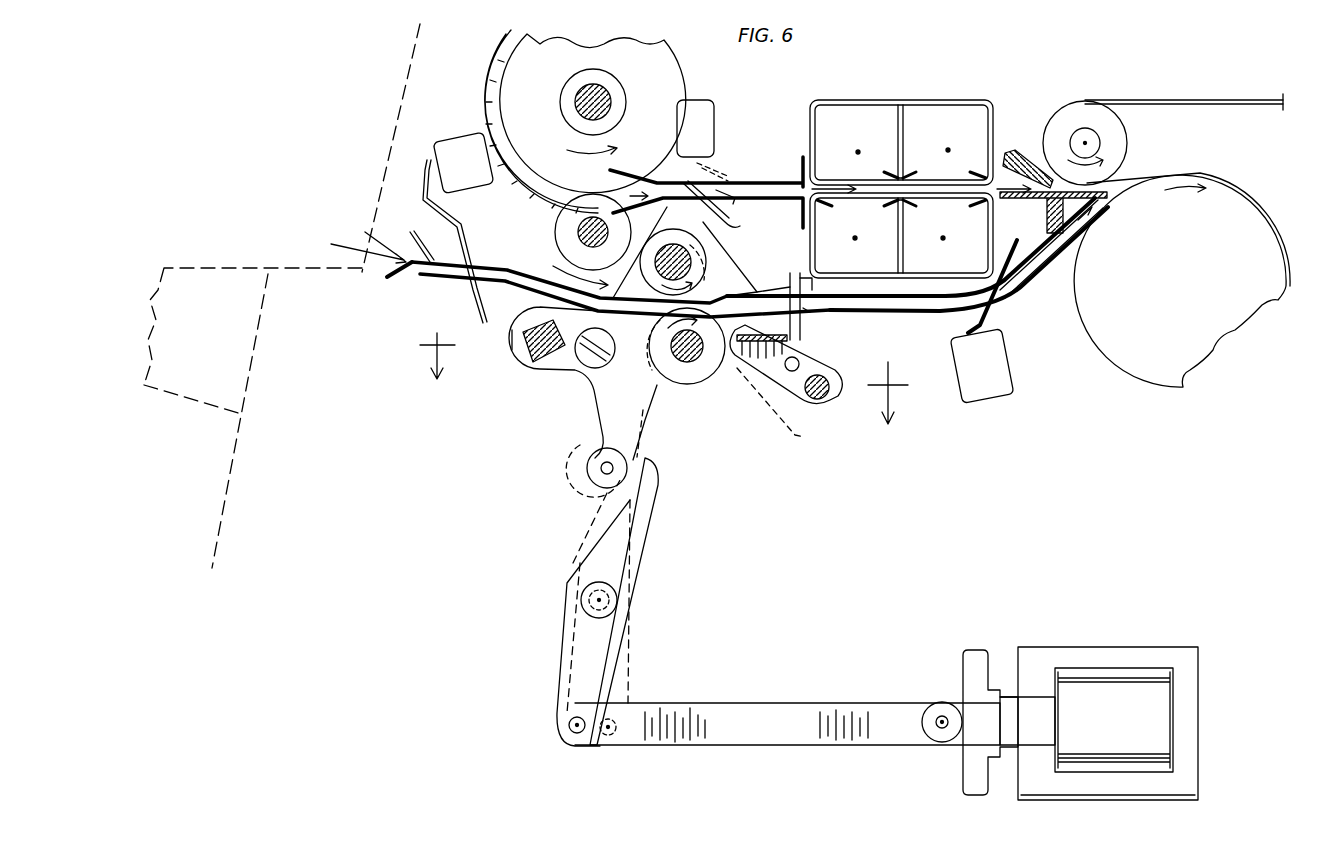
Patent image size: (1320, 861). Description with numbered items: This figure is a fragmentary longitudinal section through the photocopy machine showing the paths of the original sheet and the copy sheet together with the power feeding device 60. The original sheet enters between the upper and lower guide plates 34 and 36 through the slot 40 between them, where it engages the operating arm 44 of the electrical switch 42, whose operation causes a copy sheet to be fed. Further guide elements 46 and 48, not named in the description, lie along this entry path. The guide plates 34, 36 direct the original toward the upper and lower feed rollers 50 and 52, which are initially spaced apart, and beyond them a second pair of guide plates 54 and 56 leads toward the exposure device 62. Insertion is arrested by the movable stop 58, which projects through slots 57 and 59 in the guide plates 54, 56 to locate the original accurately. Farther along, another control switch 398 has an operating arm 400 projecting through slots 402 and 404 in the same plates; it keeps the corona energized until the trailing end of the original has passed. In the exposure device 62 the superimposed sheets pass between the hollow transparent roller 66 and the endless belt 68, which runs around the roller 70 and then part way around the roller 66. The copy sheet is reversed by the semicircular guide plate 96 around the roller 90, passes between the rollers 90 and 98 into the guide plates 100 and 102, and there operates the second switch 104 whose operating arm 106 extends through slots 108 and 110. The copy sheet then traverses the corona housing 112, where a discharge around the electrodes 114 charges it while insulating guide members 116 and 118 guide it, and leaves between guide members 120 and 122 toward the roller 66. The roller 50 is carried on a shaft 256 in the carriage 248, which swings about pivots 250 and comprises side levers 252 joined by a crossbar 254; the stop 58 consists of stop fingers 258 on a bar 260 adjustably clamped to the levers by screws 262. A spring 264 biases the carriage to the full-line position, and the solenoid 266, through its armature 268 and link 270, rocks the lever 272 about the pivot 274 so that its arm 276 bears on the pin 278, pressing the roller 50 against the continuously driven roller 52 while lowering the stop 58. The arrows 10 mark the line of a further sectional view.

The section line arrows 10 is at (659, 373).
The upper guide plate 34 is at (418, 262).
The lower guide plate 36 is at (412, 280).
The slot 40 is at (368, 236).
The electrical switch 42 is at (462, 133).
The operating arm 44 is at (466, 232).
The upper sheet guide 46 is at (490, 274).
The lower sheet guide 48 is at (520, 300).
The upper feed roller 50 is at (673, 229).
The lower feed roller 52 is at (692, 385).
The upper guide plate 54 is at (905, 296).
The lower guide plate 56 is at (888, 312).
The slot 57 is at (812, 283).
The movable stop 58 is at (797, 272).
The slot 59 is at (806, 312).
The power feeding device 60 is at (568, 267).
The exposure device 62 is at (1226, 92).
The transparent roller 66 is at (1144, 382).
The endless belt 68 is at (1152, 100).
The roller 70 is at (1110, 132).
The roller 90 is at (678, 68).
The semicircular guide plate 96 is at (498, 60).
The forwarding roller 98 is at (555, 232).
The guide plate 100 is at (780, 181).
The guide plate 102 is at (790, 205).
The second electrical switch 104 is at (716, 112).
The operating arm 106 is at (711, 210).
The slot 108 is at (763, 181).
The slot 110 is at (738, 203).
The corona housing 112 is at (850, 100).
The electrodes 114 is at (943, 238).
The upper guide member 116 is at (955, 180).
The lower guide member 118 is at (958, 204).
The guide member 120 is at (1022, 154).
The guide member 122 is at (1052, 212).
The carriage 248 is at (513, 377).
The pivots 250 is at (590, 368).
The levers 252 is at (543, 375).
The crossbar 254 is at (525, 346).
The shaft 256 is at (708, 247).
The stop fingers 258 is at (790, 290).
The bar 260 is at (802, 335).
The clamping screws 262 is at (830, 398).
The spring 264 is at (672, 462).
The solenoid 266 is at (1112, 647).
The armature 268 is at (972, 685).
The link 270 is at (770, 703).
The lever 272 is at (610, 633).
The pivot 274 is at (615, 595).
The arm 276 is at (652, 500).
The pin 278 is at (630, 460).
The control switch 398 is at (1020, 366).
The operating arm 400 is at (1005, 307).
The slot 402 is at (1050, 265).
The slot 404 is at (1054, 257).